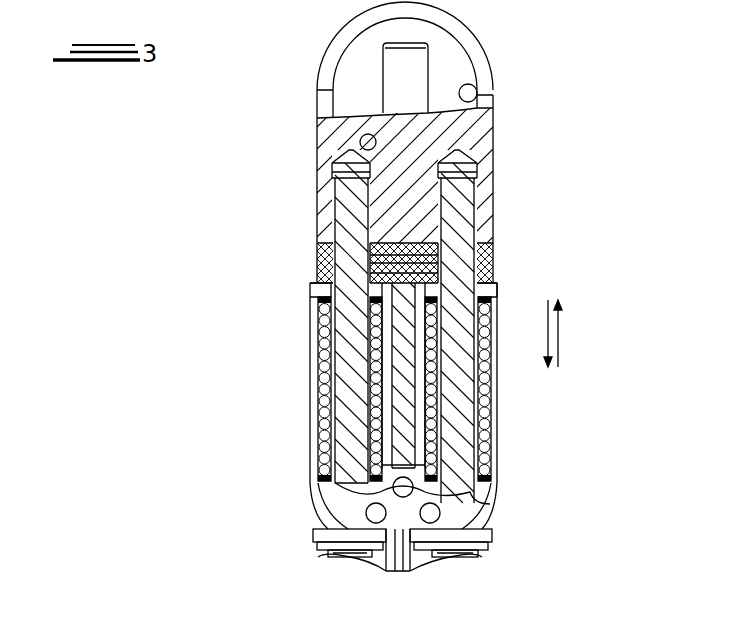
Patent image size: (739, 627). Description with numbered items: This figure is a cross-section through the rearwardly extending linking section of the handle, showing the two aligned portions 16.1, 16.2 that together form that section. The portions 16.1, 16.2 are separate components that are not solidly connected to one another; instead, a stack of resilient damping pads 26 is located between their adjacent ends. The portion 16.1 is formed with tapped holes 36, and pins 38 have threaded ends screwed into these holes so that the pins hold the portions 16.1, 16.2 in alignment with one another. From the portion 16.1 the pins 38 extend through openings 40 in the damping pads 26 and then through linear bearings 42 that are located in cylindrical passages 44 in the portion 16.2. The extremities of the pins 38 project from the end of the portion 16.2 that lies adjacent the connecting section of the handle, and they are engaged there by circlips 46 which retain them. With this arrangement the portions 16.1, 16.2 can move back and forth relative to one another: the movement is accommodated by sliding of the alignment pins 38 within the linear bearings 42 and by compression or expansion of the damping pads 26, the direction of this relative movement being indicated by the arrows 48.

The portion of linking section 16.1 is at (492, 230).
The portion of linking section 16.2 is at (497, 428).
The resilient damping pads 26 is at (490, 278).
The tapped holes 36 is at (333, 206).
The pins 38 is at (350, 348).
The openings 40 is at (331, 272).
The linear bearings 42 is at (493, 458).
The cylindrical passages 44 is at (490, 470).
The circlips 46 is at (318, 557).
The arrows 48 is at (578, 333).